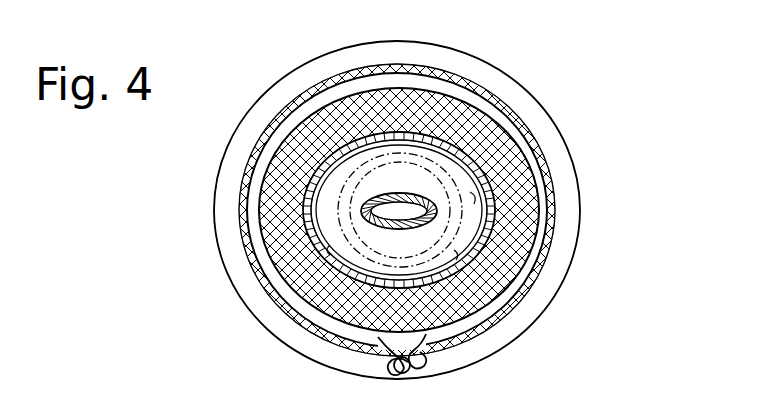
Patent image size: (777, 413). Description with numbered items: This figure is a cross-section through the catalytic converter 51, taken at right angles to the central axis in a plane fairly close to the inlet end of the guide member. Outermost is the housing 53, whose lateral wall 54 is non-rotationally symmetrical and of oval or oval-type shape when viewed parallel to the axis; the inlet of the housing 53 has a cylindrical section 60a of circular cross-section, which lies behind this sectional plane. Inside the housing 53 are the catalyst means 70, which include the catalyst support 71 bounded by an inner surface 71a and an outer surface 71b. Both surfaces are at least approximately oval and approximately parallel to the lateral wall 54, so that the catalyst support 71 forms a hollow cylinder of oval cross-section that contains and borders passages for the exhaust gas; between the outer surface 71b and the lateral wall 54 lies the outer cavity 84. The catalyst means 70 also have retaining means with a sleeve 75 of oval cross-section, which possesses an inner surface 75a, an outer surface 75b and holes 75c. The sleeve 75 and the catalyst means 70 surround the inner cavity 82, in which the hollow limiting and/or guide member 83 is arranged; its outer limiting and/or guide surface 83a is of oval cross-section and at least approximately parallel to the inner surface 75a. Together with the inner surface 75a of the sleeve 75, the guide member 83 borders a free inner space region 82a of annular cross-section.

The catalytic converter 51 is at (270, 82).
The housing 53 is at (232, 135).
The lateral wall 54 is at (240, 181).
The cylindrical section 60a is at (462, 160).
The catalyst means 70 is at (262, 215).
The catalyst support 71 is at (300, 248).
The inner surface 71a is at (330, 290).
The outer surface 71b is at (345, 338).
The sleeve 75 is at (523, 237).
The inner surface 75a is at (470, 258).
The outer surface 75b is at (455, 275).
The holes 75c is at (460, 312).
The inner cavity 82 is at (487, 192).
The free inner space region 82a is at (507, 215).
The limiting and/or guide member 83 is at (410, 193).
The limiting and/or guide surface 83a is at (418, 195).
The outer cavity 84 is at (447, 70).